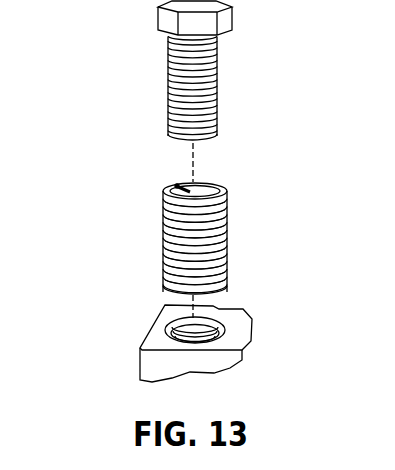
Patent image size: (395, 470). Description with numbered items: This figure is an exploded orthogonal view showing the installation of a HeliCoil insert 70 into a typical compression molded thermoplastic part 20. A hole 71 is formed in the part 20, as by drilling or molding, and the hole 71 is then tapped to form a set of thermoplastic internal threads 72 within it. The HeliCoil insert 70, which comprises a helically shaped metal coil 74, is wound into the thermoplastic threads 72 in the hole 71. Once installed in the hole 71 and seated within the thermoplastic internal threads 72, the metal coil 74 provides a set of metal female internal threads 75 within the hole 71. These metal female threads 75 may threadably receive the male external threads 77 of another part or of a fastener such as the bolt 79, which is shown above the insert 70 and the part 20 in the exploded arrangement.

The bolt 79 is at (179, 70).
The male (external) threads 77 is at (214, 86).
The HeliCoil insert 70 is at (199, 223).
The helically shaped metal coil 74 is at (163, 217).
The metal female (internal) threads 75 is at (183, 186).
The hole 71 is at (207, 320).
The thermoplastic internal threads 72 is at (177, 325).
The thermoplastic part 20 is at (175, 320).